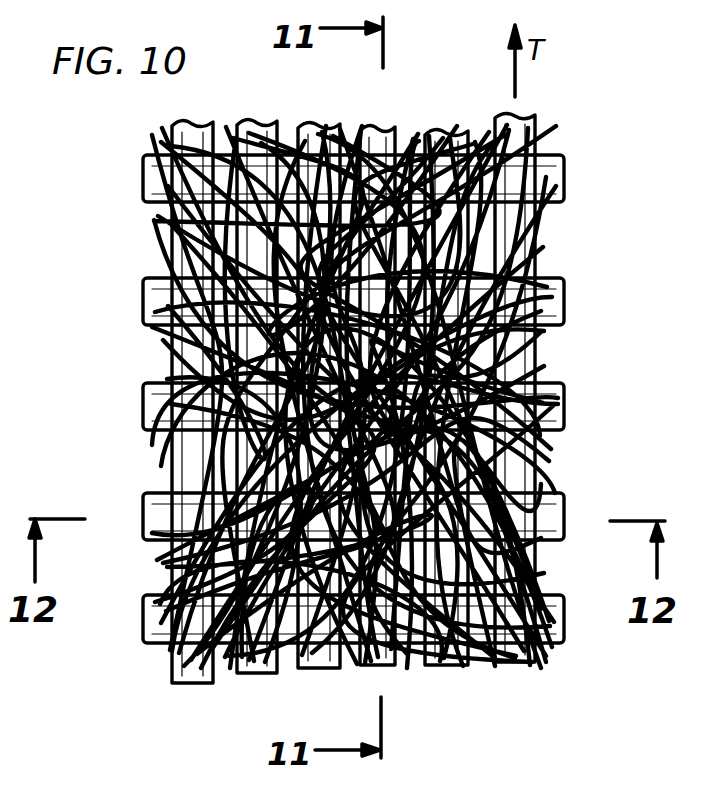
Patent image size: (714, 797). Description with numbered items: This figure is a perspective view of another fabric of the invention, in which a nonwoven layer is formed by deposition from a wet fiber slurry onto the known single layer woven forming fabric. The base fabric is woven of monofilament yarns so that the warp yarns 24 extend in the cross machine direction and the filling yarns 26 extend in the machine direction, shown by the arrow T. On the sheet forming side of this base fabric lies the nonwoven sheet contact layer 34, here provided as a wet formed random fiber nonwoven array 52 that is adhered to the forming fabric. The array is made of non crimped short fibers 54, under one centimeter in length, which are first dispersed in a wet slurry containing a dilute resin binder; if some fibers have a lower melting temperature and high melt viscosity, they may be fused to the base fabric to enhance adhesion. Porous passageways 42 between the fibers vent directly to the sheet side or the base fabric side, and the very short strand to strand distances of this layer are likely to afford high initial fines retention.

The warp yarns 24 is at (562, 297).
The filling yarns 26 is at (530, 122).
The nonwoven sheet contact layer 34 is at (520, 233).
The porous passageways 42 is at (520, 436).
The wet formed random fiber nonwoven array 52 is at (182, 264).
The non crimped short fibers 54 is at (530, 366).